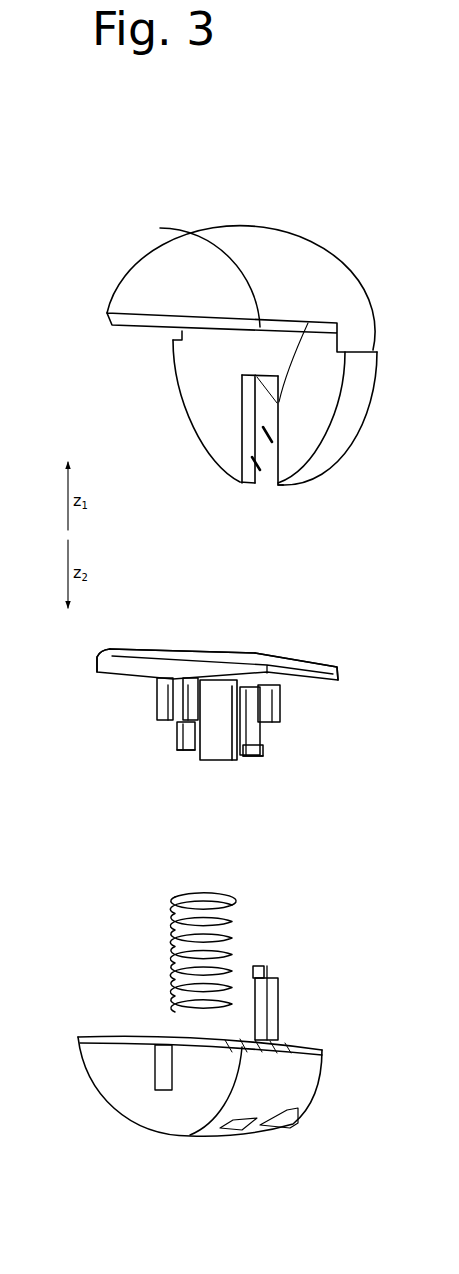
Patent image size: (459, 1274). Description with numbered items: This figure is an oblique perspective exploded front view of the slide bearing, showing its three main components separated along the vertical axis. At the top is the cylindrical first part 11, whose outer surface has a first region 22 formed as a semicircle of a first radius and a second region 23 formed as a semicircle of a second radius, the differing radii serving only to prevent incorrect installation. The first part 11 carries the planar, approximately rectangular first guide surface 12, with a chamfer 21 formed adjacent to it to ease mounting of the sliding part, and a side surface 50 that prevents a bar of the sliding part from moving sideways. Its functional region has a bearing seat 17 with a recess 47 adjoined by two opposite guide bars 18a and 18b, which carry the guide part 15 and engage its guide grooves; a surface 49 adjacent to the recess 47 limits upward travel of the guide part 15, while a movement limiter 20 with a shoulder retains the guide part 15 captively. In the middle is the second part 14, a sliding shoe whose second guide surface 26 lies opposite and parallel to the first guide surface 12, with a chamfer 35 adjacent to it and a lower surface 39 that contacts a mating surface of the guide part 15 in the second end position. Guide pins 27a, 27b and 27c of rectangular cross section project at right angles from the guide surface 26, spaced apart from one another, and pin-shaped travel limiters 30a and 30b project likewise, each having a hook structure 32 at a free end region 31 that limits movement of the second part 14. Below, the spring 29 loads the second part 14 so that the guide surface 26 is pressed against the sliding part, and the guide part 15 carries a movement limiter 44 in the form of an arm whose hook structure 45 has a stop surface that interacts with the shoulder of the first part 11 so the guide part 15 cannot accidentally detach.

The first part 11 is at (322, 258).
The first region 22 is at (278, 248).
The chamfer 21 is at (110, 321).
The first guide surface 12 is at (143, 335).
The side surface 50 is at (216, 350).
The second region 23 is at (366, 380).
The surface 49 is at (307, 327).
The guide bar 18a is at (236, 431).
The guide bar 18b is at (284, 413).
The movement limiter 20 is at (263, 454).
The bearing seat 17 is at (265, 474).
The recess 47 is at (284, 485).
The second part 14 is at (218, 662).
The second guide surface 26 is at (172, 645).
The chamfer 35 is at (334, 659).
The lower surface 39 is at (135, 682).
The guide pin 27a is at (155, 700).
The guide pin 27b is at (181, 709).
The guide pin 27c is at (283, 707).
The travel limiter 30a is at (187, 758).
The travel limiter 30b is at (245, 760).
The free end region 31 is at (173, 758).
The hook structure 32 is at (283, 747).
The spring 29 is at (234, 902).
The movement limiter 44 is at (291, 977).
The hook structure 45 is at (263, 964).
The guide part 15 is at (163, 1108).